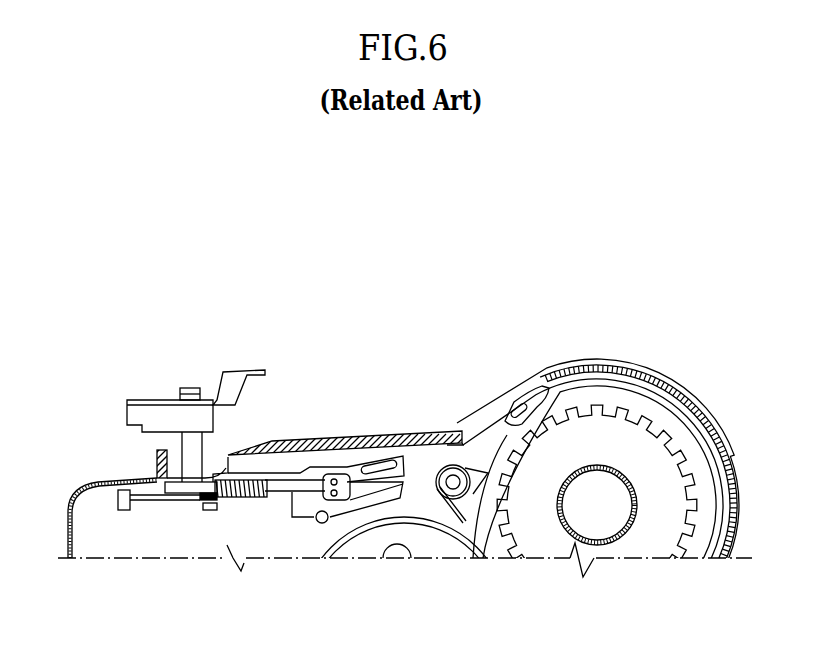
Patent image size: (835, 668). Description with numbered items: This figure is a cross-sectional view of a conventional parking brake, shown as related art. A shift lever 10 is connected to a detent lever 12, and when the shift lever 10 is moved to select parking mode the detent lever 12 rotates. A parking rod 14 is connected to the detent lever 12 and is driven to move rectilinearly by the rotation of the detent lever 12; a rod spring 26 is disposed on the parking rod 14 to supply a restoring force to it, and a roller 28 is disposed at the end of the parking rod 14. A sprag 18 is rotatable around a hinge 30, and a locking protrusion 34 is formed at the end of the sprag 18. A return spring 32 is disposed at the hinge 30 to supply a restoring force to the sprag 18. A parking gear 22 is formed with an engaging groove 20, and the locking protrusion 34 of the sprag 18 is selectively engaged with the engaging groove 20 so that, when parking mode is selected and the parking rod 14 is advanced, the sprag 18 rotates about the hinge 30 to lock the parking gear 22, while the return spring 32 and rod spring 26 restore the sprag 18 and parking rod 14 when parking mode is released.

The shift lever 10 is at (158, 410).
The detent lever 12 is at (170, 500).
The parking rod 14 is at (293, 515).
The sprag 18 is at (443, 458).
The engaging groove 20 is at (585, 410).
The parking gear 22 is at (617, 433).
The rod spring 26 is at (246, 498).
The roller 28 is at (333, 476).
The hinge 30 is at (474, 518).
The return spring 32 is at (448, 510).
The locking protrusion 34 is at (546, 396).